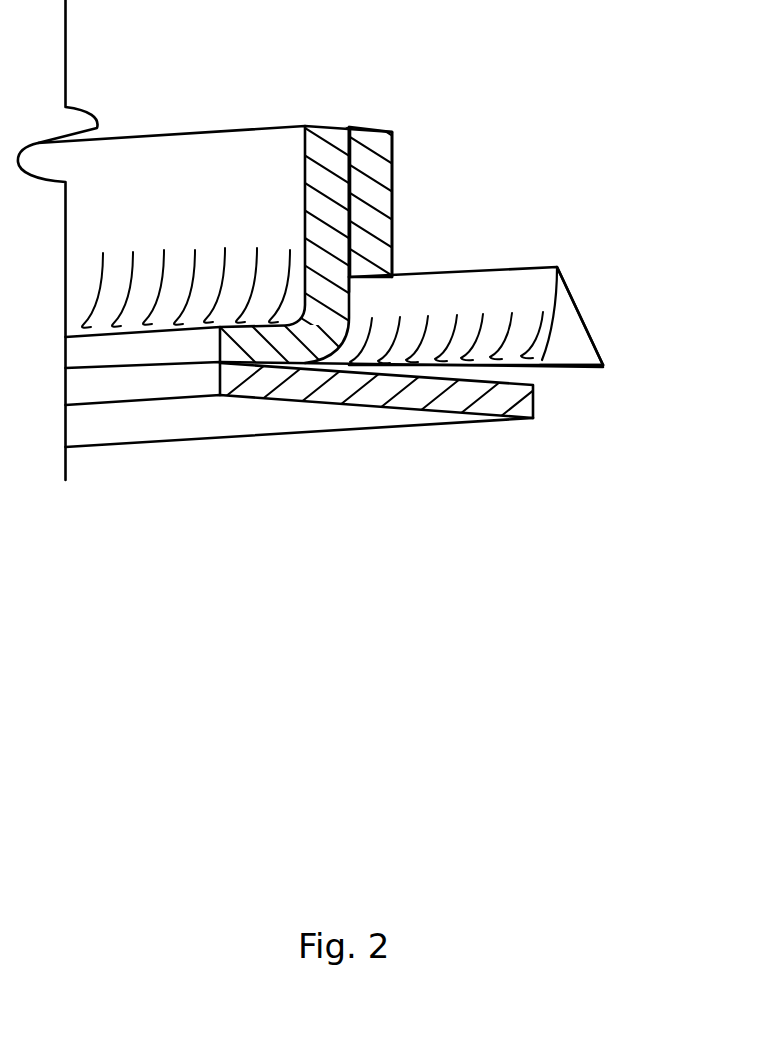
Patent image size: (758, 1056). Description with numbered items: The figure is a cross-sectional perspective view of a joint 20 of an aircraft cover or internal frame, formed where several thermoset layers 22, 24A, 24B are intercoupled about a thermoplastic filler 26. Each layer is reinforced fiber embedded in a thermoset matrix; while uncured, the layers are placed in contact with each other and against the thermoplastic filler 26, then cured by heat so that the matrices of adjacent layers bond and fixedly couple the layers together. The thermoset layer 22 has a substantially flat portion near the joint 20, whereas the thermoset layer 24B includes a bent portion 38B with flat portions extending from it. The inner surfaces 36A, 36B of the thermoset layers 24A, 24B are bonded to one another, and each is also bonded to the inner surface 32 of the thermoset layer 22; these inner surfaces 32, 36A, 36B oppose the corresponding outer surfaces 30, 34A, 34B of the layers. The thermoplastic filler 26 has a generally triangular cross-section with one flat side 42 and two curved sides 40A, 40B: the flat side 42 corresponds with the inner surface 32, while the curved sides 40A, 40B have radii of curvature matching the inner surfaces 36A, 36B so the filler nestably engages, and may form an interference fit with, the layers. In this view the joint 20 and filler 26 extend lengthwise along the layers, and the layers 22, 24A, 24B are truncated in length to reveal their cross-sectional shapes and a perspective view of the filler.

The joint 20 is at (537, 70).
The thermoset layer 22 is at (512, 476).
The thermoset layer 24A is at (400, 156).
The thermoset layer 24B is at (235, 120).
The thermoplastic filler 26 is at (578, 290).
The outer surface 30 is at (340, 412).
The inner surface 32 is at (445, 366).
The outer surface 34A is at (393, 190).
The outer surface 34B is at (152, 158).
The inner surface 36A is at (343, 170).
The inner surface 36B is at (352, 298).
The bent portion 38B is at (318, 345).
The curved side 40A is at (598, 353).
The curved side 40B is at (530, 307).
The flat side 42 is at (564, 368).